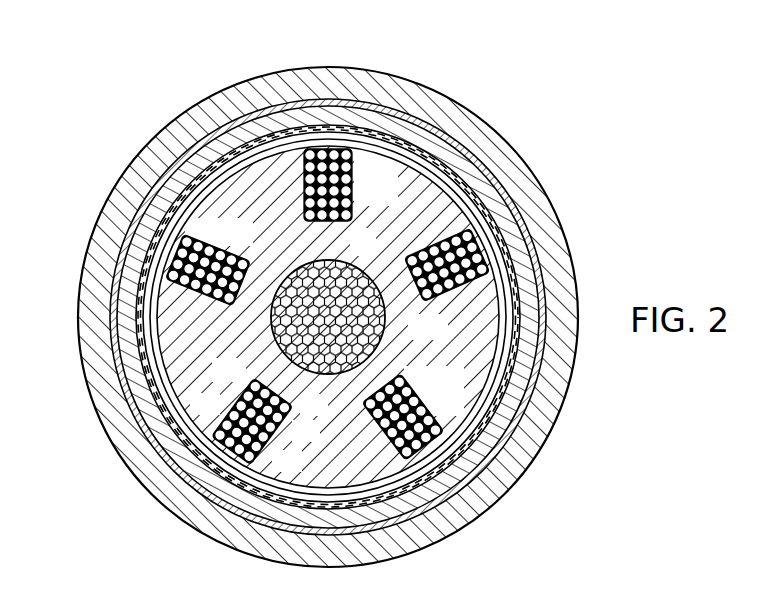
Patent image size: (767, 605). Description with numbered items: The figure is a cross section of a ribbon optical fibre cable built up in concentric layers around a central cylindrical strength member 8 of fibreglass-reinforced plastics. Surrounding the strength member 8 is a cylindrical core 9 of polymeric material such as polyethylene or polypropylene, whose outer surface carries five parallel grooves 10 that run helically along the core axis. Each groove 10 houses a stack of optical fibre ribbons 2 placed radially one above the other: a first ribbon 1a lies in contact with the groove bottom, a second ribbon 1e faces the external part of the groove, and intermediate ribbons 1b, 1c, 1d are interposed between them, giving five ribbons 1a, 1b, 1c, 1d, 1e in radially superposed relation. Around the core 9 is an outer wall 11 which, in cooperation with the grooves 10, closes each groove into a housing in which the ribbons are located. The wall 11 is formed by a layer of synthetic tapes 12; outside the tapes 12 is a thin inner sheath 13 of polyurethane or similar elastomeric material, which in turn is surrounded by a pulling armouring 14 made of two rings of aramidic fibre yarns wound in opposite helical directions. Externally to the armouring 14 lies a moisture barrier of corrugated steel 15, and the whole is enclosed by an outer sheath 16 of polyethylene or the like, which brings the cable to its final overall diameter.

The optical fibre ribbon 1a is at (290, 405).
The intermediate optical fibre ribbon 1b is at (246, 391).
The intermediate optical fibre ribbon 1c is at (278, 428).
The intermediate optical fibre ribbon 1d is at (225, 420).
The optical fibre ribbon 1e is at (261, 449).
The wire bundle 2 is at (352, 165).
The cylindrical strength member 8 is at (343, 268).
The cylindrical core 9 is at (166, 352).
The grooves 10 is at (353, 192).
The outer wall 11 is at (293, 147).
The synthetic tapes 12 is at (470, 170).
The inner sheath 13 is at (470, 437).
The pulling armouring 14 is at (443, 487).
The moisture barrier of corrugated steel 15 is at (347, 530).
The outer sheath 16 is at (293, 548).